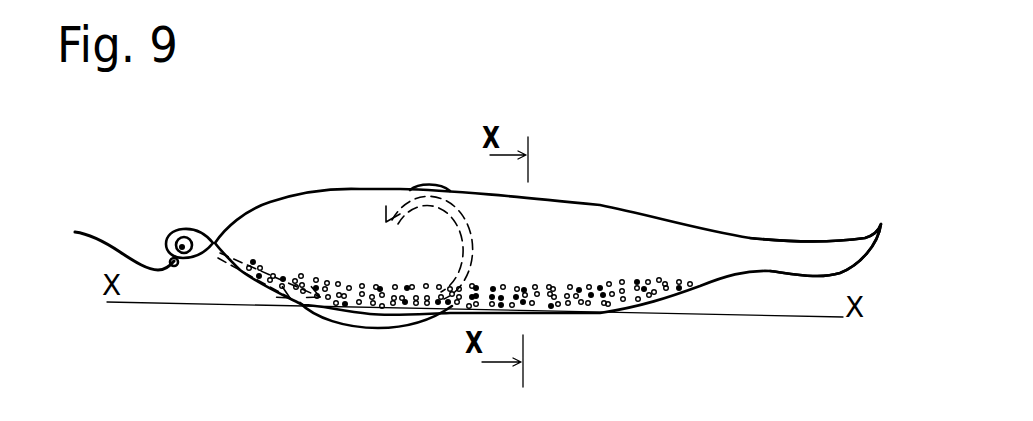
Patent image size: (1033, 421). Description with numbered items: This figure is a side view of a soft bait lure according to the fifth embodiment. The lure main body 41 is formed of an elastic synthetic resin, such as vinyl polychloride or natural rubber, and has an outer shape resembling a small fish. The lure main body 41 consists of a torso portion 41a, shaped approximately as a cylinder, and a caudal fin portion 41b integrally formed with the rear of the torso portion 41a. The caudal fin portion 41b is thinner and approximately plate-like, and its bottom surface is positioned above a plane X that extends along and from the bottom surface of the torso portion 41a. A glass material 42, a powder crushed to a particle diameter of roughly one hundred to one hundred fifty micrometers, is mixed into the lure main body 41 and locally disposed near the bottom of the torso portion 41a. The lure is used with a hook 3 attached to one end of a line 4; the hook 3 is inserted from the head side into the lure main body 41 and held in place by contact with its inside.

The line 4 is at (132, 259).
The lure main body 41 is at (644, 190).
The torso portion 41a is at (327, 236).
The caudal fin portion 41b is at (790, 256).
The hook 3 is at (355, 323).
The glass material 42 is at (557, 313).